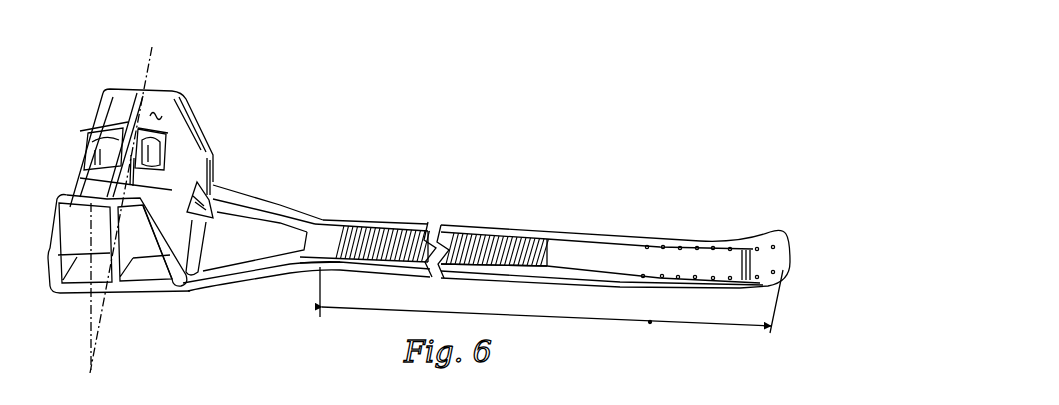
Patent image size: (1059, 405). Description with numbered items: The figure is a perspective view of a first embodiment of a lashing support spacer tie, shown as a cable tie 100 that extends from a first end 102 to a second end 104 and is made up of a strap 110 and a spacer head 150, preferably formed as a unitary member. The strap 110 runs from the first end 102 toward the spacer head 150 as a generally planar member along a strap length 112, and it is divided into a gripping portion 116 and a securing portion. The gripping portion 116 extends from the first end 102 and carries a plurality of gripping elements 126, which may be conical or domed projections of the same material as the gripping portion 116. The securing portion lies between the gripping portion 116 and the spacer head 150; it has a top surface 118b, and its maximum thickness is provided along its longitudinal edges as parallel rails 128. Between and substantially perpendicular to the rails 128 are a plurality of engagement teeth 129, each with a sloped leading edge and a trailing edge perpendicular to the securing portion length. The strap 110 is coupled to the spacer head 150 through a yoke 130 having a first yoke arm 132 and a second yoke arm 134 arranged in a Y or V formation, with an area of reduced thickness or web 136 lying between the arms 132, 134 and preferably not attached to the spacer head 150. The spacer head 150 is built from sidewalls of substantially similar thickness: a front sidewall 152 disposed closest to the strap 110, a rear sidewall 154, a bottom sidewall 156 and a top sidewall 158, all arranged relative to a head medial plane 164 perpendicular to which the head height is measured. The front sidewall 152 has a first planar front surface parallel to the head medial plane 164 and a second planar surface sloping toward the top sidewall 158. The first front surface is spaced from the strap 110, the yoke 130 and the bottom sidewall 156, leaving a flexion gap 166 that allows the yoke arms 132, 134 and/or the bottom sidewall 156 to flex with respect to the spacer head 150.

The cable tie 100 is at (458, 162).
The first end 102 is at (790, 240).
The second end 104 is at (50, 268).
The strap 110 is at (540, 290).
The strap length 112 is at (650, 322).
The gripping portion 116 is at (703, 260).
The top surface 118b is at (567, 250).
The gripping elements 126 is at (757, 246).
The parallel rails 128 is at (380, 223).
The engagement teeth 129 is at (493, 247).
The yoke 130 is at (297, 200).
The first yoke arm 132 is at (247, 270).
The second yoke arm 134 is at (230, 197).
The web 136 is at (253, 230).
The spacer head 150 is at (108, 82).
The front sidewall 152 is at (187, 128).
The rear sidewall 154 is at (63, 230).
The bottom sidewall 156 is at (153, 290).
The top sidewall 158 is at (160, 100).
The head medial plane 164 is at (88, 323).
The flexion gap 166 is at (193, 277).